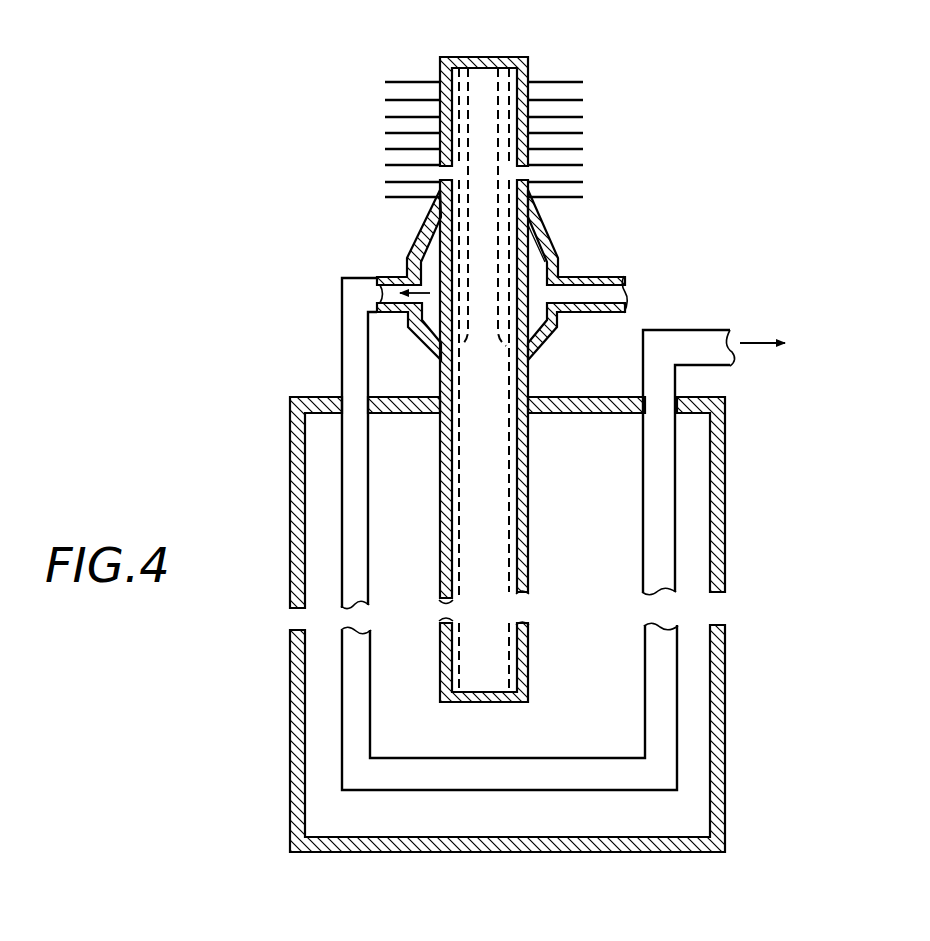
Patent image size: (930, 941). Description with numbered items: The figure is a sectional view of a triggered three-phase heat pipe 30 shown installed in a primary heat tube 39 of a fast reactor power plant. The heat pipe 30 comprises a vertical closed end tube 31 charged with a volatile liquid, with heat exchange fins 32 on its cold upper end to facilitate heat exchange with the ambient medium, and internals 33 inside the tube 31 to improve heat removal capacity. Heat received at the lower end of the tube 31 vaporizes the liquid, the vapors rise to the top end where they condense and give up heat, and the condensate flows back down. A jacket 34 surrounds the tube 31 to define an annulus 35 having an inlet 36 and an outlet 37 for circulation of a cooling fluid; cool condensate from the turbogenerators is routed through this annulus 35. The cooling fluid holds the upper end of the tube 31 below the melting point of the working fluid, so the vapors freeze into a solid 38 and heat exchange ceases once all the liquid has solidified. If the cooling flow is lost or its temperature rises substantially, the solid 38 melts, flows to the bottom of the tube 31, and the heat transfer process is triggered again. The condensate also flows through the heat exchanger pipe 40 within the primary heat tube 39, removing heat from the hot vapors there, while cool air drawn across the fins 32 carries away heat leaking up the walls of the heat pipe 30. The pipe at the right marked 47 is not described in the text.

The heat pipe 30 is at (603, 121).
The closed end tube 31 is at (470, 57).
The heat exchange fins 32 is at (575, 116).
The internals 33 is at (510, 503).
The jacket 34 is at (427, 240).
The annulus 35 is at (537, 267).
The inlet 36 is at (631, 292).
The outlet 37 is at (400, 277).
The solid 38 is at (512, 151).
The primary heat tube 39 is at (290, 752).
The heat exchanger pipe 40 is at (545, 758).
The outlet pipe 47 is at (720, 340).